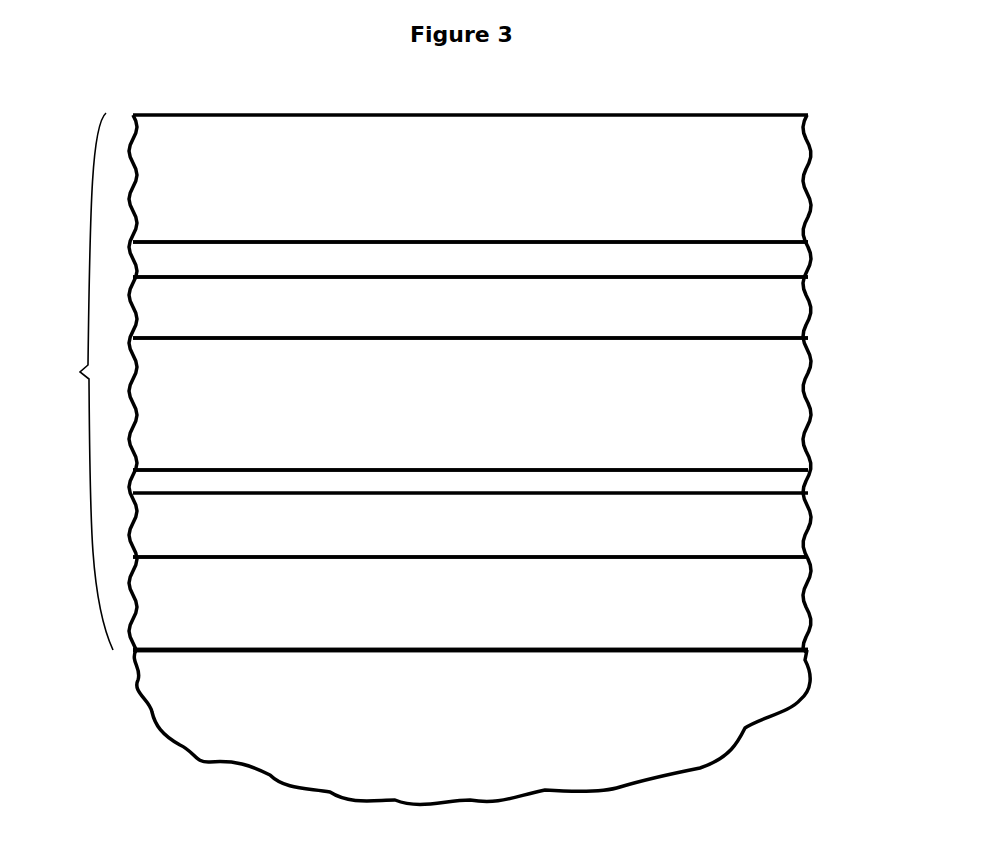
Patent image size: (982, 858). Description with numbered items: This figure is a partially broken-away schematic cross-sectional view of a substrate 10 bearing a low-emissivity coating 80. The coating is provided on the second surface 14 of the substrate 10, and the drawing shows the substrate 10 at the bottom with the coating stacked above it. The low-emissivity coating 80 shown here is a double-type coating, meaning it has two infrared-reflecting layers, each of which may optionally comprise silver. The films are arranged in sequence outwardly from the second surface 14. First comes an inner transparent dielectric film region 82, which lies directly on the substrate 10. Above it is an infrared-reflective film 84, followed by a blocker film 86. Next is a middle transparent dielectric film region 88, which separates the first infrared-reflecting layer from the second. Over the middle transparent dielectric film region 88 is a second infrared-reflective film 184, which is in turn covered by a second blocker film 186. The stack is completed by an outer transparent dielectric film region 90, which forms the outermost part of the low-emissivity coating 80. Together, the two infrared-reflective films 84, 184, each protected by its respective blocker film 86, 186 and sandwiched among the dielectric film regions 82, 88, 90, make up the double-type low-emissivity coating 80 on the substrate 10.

The substrate 10 is at (472, 727).
The second surface 14 is at (705, 645).
The low-emissivity coating 80 is at (75, 381).
The inner transparent dielectric film region 82 is at (470, 603).
The infrared-reflective film 84 is at (470, 525).
The blocker film 86 is at (782, 486).
The middle transparent dielectric film region 88 is at (470, 404).
The outer transparent dielectric film region 90 is at (470, 178).
The infrared-reflective film 184 is at (470, 307).
The blocker film 186 is at (796, 262).